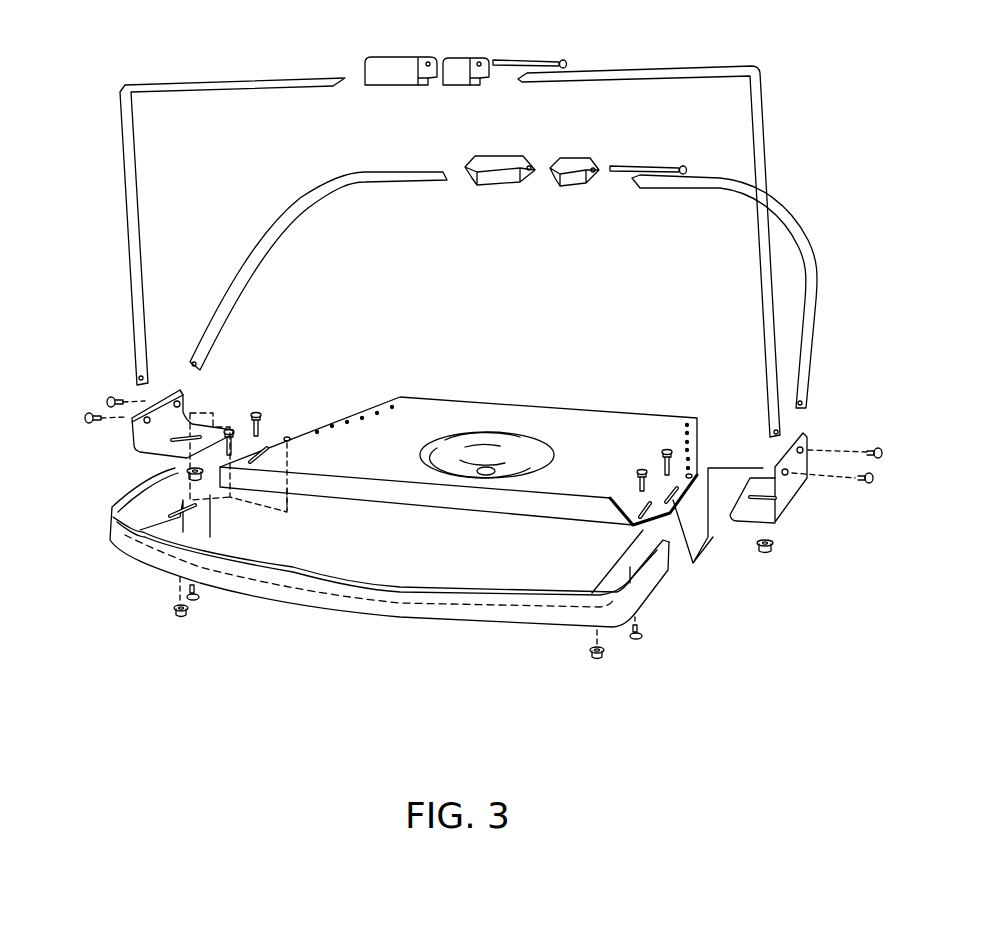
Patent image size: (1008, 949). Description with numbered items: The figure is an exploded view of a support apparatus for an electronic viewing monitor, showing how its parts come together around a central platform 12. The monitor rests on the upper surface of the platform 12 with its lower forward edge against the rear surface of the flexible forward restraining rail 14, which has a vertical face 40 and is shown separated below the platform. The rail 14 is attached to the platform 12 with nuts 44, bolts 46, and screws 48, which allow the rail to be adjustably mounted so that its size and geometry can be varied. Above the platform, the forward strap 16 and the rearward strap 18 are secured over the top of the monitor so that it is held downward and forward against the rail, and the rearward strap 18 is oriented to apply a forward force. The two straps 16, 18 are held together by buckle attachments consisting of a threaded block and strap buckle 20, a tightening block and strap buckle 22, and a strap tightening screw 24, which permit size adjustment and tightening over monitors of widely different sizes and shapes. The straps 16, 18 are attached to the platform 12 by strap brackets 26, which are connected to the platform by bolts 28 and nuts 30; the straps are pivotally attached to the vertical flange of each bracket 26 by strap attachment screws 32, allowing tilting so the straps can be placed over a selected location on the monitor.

The platform 12 is at (547, 412).
The forward restraining rail 14 is at (367, 578).
The forward strap 16 is at (766, 158).
The rearward strap 18 is at (808, 236).
The threaded block and strap buckle 20 is at (398, 57).
The tightening block and strap buckle 22 is at (472, 58).
The strap tightening screw 24 is at (554, 60).
The strap bracket 26 is at (178, 405).
The bolt 28 is at (262, 413).
The nut 30 is at (185, 477).
The strap attachment screw 32 is at (85, 418).
The vertical face 40 is at (455, 600).
The nut 44 is at (231, 428).
The bolt 46 is at (188, 617).
The screw 48 is at (200, 596).